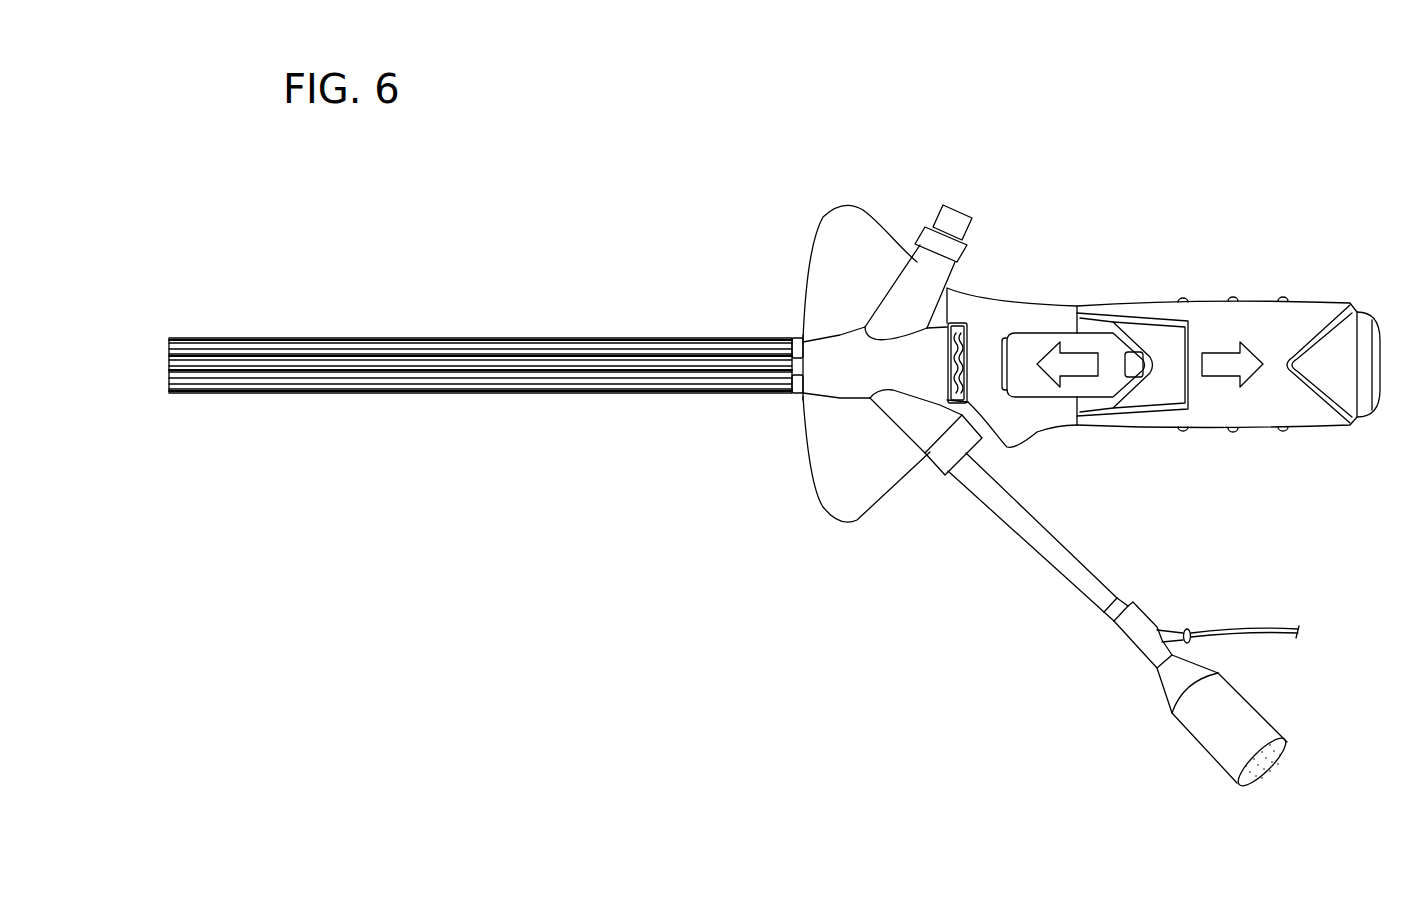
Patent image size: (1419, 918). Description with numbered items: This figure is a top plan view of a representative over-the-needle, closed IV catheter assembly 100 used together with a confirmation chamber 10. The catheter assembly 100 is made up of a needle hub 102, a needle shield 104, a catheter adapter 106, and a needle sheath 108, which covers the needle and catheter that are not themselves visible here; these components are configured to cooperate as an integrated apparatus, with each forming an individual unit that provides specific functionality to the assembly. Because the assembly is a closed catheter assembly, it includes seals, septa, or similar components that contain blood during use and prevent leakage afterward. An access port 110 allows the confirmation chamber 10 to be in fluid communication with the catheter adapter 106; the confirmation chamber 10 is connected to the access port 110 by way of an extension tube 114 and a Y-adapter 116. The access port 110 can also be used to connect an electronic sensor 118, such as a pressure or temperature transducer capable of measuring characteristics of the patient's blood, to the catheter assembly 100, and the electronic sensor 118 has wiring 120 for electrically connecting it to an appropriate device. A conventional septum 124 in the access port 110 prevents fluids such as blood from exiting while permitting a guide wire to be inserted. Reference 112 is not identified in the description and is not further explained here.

The IV catheter assembly 100 is at (1055, 146).
The needle hub 102 is at (1304, 302).
The needle shield 104 is at (1055, 300).
The catheter adapter 106 is at (792, 450).
The needle sheath 108 is at (400, 410).
The access port 110 is at (917, 263).
The wing / lobe 112 is at (837, 233).
The extension tube 114 is at (1080, 565).
The Y-adapter 116 is at (1133, 623).
The electronic sensor 118 is at (1188, 631).
The wiring 120 is at (1250, 637).
The septum 124 is at (953, 217).
The confirmation chamber 10 is at (1276, 694).